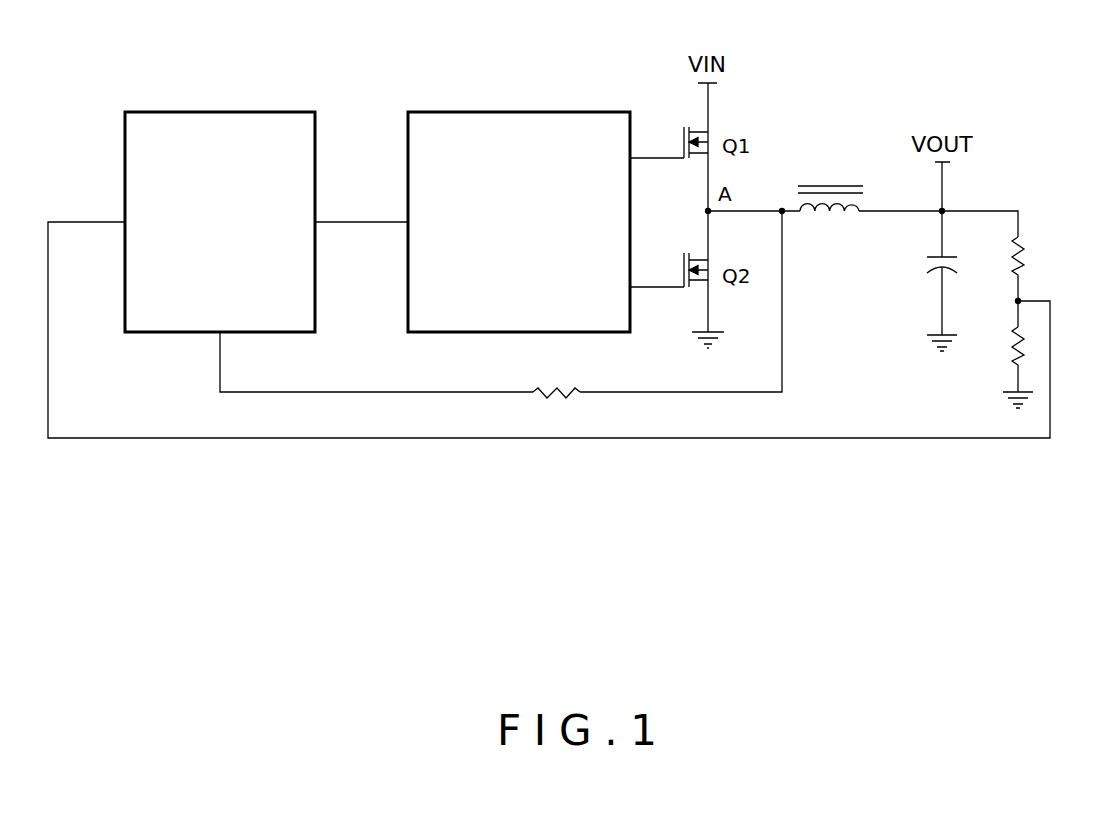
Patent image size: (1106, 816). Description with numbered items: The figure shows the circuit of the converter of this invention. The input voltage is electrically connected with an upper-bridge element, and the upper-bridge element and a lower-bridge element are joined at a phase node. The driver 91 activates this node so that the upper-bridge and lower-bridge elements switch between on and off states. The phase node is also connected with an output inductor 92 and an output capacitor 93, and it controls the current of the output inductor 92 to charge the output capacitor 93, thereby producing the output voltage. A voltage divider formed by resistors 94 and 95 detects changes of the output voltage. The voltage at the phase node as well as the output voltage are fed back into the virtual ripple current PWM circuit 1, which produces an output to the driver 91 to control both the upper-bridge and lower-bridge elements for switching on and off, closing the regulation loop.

The virtual ripple current PWM circuit 1 is at (262, 92).
The driver 91 is at (552, 93).
The output inductor 92 is at (825, 178).
The output capacitor 93 is at (928, 281).
The voltage divider 94 is at (1027, 247).
The voltage divider 95 is at (1010, 349).